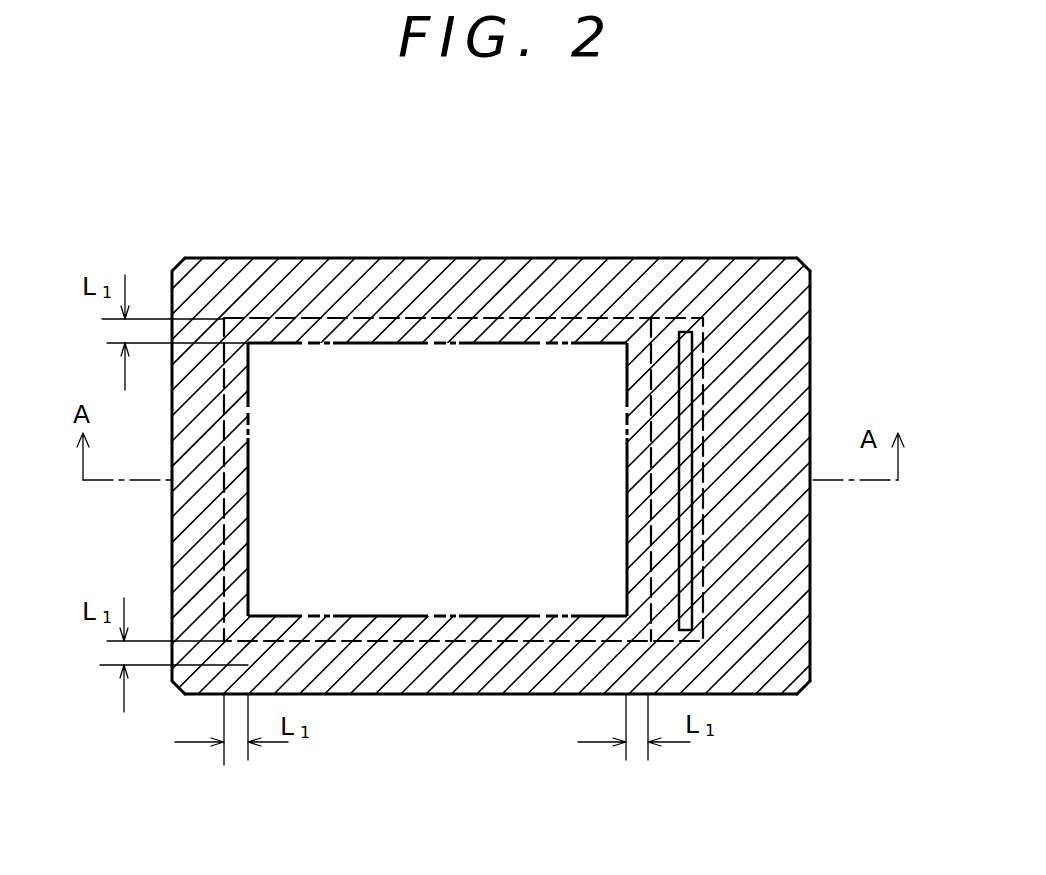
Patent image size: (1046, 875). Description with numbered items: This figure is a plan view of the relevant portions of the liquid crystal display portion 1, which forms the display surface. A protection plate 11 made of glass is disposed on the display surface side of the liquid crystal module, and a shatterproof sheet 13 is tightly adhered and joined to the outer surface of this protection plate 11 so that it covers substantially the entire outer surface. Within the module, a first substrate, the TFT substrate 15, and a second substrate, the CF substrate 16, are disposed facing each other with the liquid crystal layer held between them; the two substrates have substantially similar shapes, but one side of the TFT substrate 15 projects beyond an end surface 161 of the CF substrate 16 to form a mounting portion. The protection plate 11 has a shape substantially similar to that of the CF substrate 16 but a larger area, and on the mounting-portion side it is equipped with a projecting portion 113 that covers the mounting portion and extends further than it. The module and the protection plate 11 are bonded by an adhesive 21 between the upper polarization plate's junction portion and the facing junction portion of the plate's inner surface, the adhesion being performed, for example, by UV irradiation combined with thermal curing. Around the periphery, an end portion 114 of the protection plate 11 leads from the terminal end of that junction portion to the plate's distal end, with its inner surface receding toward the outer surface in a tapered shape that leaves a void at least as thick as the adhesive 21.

The liquid crystal display portion 1 is at (522, 257).
The protection plate 11 is at (812, 280).
The shatterproof sheet 13 is at (237, 265).
The end portion 114 is at (676, 270).
The projecting portion 113 is at (790, 602).
The adhesive 21 is at (530, 600).
The second substrate (CF substrate) 16 is at (460, 628).
The end surface 161 is at (652, 404).
The first substrate (TFT substrate) 15 is at (673, 628).